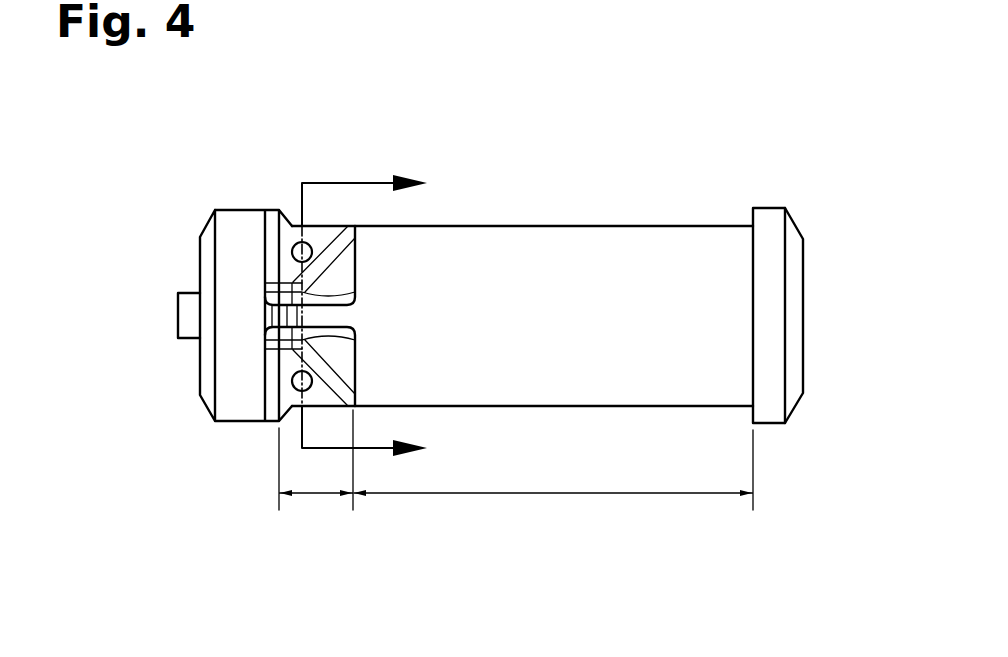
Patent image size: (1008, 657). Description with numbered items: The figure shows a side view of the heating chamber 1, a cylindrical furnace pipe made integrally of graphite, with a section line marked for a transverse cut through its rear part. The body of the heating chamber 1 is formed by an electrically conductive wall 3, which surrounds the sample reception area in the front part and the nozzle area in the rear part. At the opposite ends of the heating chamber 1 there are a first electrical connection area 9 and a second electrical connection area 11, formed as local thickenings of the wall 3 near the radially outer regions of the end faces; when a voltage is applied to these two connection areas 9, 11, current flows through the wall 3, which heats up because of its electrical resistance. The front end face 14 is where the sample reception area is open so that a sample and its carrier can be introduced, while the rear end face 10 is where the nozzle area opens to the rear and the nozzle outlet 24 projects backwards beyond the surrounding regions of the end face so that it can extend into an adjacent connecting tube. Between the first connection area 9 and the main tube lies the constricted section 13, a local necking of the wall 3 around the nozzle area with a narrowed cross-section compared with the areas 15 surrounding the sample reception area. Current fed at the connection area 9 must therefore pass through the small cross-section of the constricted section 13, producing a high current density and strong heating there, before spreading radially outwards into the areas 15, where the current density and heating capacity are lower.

The heating chamber 1 is at (467, 354).
The wall 3 is at (503, 212).
The first electrical connection area 9 is at (247, 362).
The rear end face 10 is at (185, 256).
The second electrical connection area 11 is at (765, 222).
The constricted section 13 is at (315, 495).
The front end face 14 is at (818, 253).
The areas surrounding the sample reception area 15 is at (592, 495).
The nozzle outlet 24 is at (152, 328).